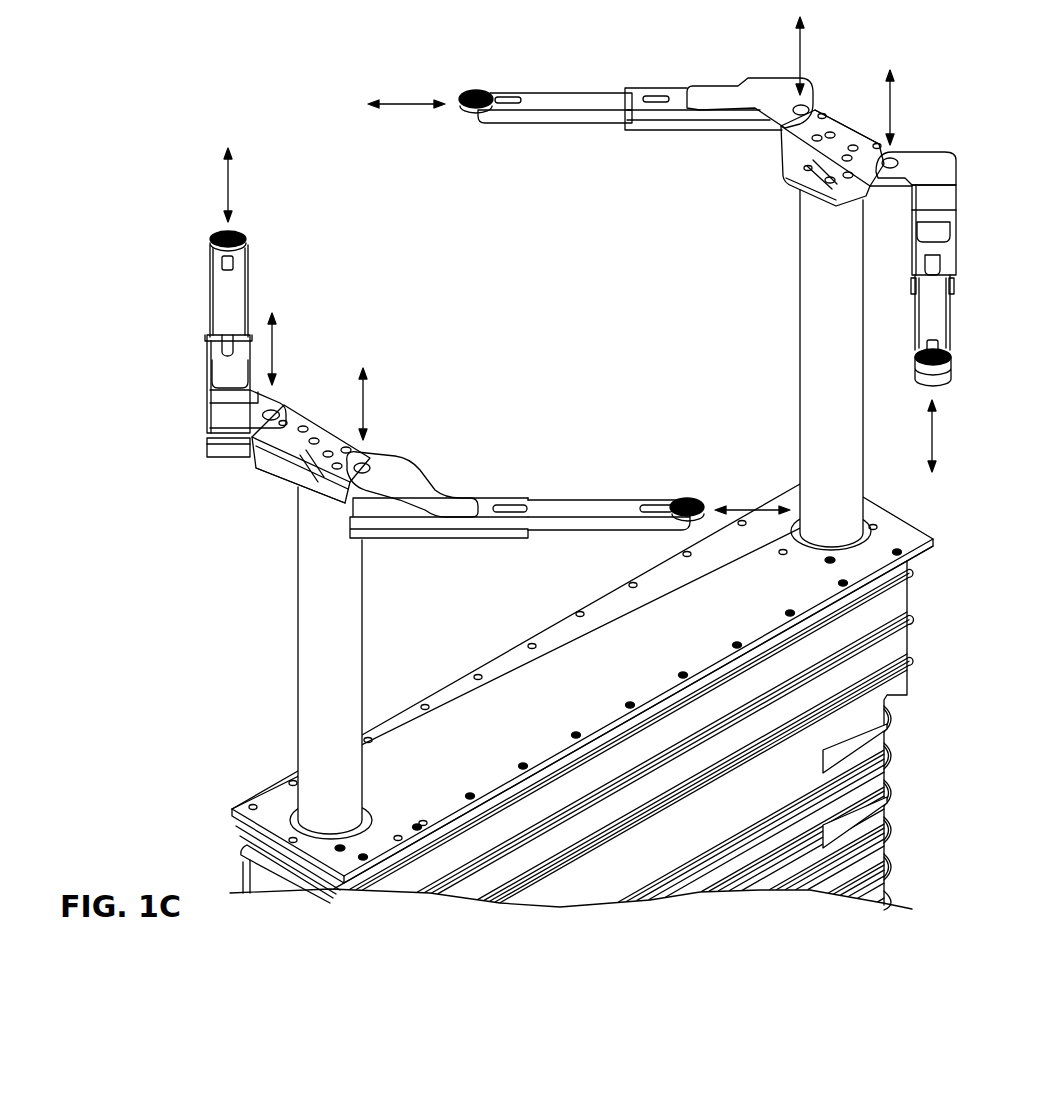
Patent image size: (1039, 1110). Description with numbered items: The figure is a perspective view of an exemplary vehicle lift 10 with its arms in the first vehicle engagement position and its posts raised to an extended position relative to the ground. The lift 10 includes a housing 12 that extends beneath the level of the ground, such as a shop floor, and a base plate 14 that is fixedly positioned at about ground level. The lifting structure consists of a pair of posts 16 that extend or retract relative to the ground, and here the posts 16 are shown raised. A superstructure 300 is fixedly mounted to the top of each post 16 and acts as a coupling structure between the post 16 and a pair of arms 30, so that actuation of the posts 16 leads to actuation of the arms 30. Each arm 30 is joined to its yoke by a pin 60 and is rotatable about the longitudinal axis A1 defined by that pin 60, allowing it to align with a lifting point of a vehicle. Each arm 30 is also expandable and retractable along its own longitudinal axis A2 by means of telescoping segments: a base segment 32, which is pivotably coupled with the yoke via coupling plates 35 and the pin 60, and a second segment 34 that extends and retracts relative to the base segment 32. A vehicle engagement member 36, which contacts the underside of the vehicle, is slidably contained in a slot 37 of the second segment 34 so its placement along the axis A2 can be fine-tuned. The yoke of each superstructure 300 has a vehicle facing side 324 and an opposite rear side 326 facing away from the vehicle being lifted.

The lift 10 is at (232, 84).
The housing 12 is at (892, 786).
The base plate 14 is at (500, 688).
The posts 16 is at (300, 662).
The arms 30 is at (666, 48).
The base segment 32 is at (208, 347).
The second segment 34 is at (212, 288).
The coupling plates 35 is at (228, 412).
The vehicle engagement member 36 is at (237, 234).
The slot 37 is at (222, 265).
The pin 60 is at (275, 410).
The superstructure 300 is at (882, 68).
The vehicle facing side 324 is at (785, 182).
The rear side 326 is at (858, 128).
The longitudinal axis A1 is at (803, 28).
The longitudinal axis A2 is at (230, 192).